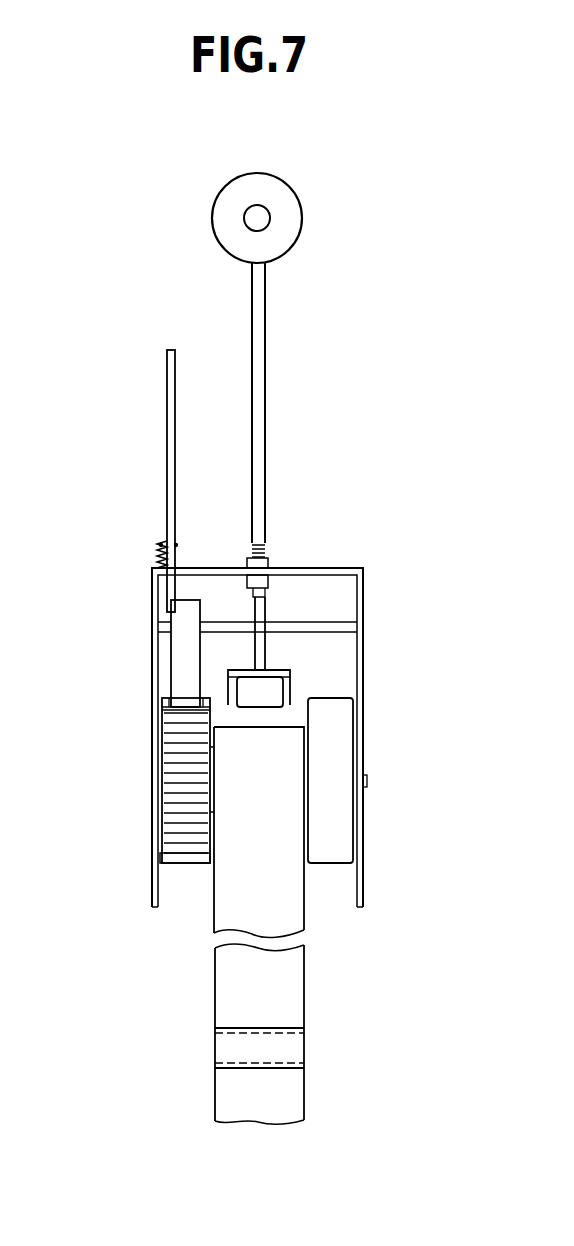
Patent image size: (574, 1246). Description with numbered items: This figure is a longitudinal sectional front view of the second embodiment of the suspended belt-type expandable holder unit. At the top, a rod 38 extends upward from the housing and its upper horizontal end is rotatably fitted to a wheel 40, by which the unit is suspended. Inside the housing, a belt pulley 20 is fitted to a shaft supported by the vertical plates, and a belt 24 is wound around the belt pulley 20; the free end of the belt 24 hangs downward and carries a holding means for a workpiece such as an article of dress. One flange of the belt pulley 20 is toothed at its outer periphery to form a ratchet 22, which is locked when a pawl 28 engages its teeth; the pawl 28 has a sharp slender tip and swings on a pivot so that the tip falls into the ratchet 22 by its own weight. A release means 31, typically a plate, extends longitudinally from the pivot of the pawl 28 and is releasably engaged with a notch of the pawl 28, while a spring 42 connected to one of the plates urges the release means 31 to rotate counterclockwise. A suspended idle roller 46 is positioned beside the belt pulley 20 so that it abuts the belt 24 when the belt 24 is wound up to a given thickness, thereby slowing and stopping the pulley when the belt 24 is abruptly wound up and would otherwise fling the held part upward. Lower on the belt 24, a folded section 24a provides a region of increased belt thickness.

The belt pulley 20 is at (338, 698).
The ratchet 22 is at (177, 778).
The belt 24 is at (287, 997).
The folded section 24a is at (237, 1050).
The pawl 28 is at (180, 648).
The release means 31 is at (167, 431).
The rod 38 is at (264, 385).
The wheel 40 is at (282, 238).
The spring 42 is at (157, 553).
The suspended idle roller 46 is at (268, 700).